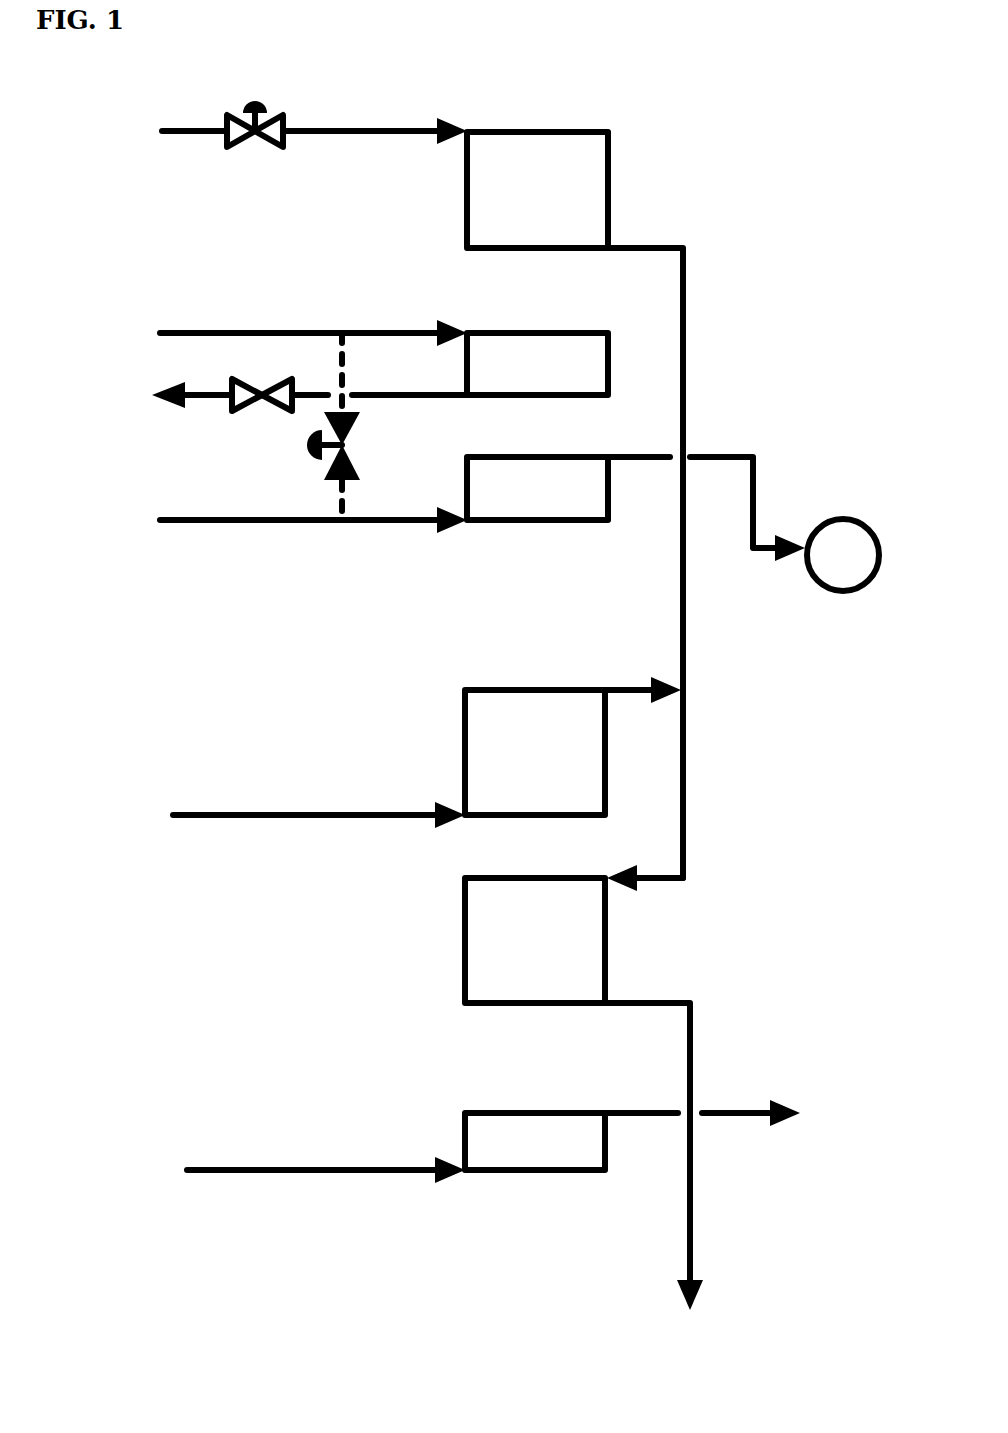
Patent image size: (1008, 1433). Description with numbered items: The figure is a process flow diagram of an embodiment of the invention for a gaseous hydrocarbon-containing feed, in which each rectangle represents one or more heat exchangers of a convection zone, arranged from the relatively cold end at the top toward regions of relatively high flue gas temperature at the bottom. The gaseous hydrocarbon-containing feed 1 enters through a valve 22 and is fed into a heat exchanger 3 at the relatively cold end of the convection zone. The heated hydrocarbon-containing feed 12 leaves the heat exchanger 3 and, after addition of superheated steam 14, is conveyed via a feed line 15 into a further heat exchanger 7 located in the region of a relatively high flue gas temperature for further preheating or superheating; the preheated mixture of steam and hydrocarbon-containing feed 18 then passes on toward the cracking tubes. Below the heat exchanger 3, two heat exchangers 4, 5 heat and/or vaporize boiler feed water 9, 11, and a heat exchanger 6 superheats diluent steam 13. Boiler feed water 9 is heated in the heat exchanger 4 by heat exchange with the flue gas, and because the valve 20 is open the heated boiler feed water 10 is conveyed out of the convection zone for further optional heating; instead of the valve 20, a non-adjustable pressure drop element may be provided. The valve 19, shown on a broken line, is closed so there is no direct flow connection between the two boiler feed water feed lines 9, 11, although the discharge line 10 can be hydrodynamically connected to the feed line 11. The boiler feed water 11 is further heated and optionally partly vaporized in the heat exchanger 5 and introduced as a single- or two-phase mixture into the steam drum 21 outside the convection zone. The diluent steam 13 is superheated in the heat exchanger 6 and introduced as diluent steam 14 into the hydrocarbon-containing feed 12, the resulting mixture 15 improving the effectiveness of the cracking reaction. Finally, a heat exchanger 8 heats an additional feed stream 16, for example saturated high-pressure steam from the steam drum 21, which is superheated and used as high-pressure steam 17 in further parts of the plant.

The gaseous hydrocarbon-containing feed 1 is at (302, 131).
The feed control valve 22 is at (255, 140).
The heat exchanger 3 is at (537, 190).
The heated hydrocarbon-containing feed 12 is at (645, 563).
The boiler feed water 9 is at (303, 333).
The heat exchanger 4 is at (537, 364).
The heated boiler feed water 10 is at (291, 395).
The valve 20 is at (262, 416).
The valve 19 is at (352, 426).
The heat exchanger 5 is at (537, 488).
The boiler feed water 11 is at (294, 520).
The steam drum 21 is at (743, 524).
The heat exchanger 6 is at (535, 752).
The superheated steam 14 is at (643, 680).
The diluent steam 13 is at (299, 815).
The feed line 15 is at (645, 868).
The heat exchanger 7 is at (535, 940).
The heat exchanger 8 is at (535, 1141).
The additional feed stream 16 is at (305, 1170).
The high-pressure steam 17 is at (720, 1113).
The preheated mixture of steam and hydrocarbon-containing feed 18 is at (655, 1175).